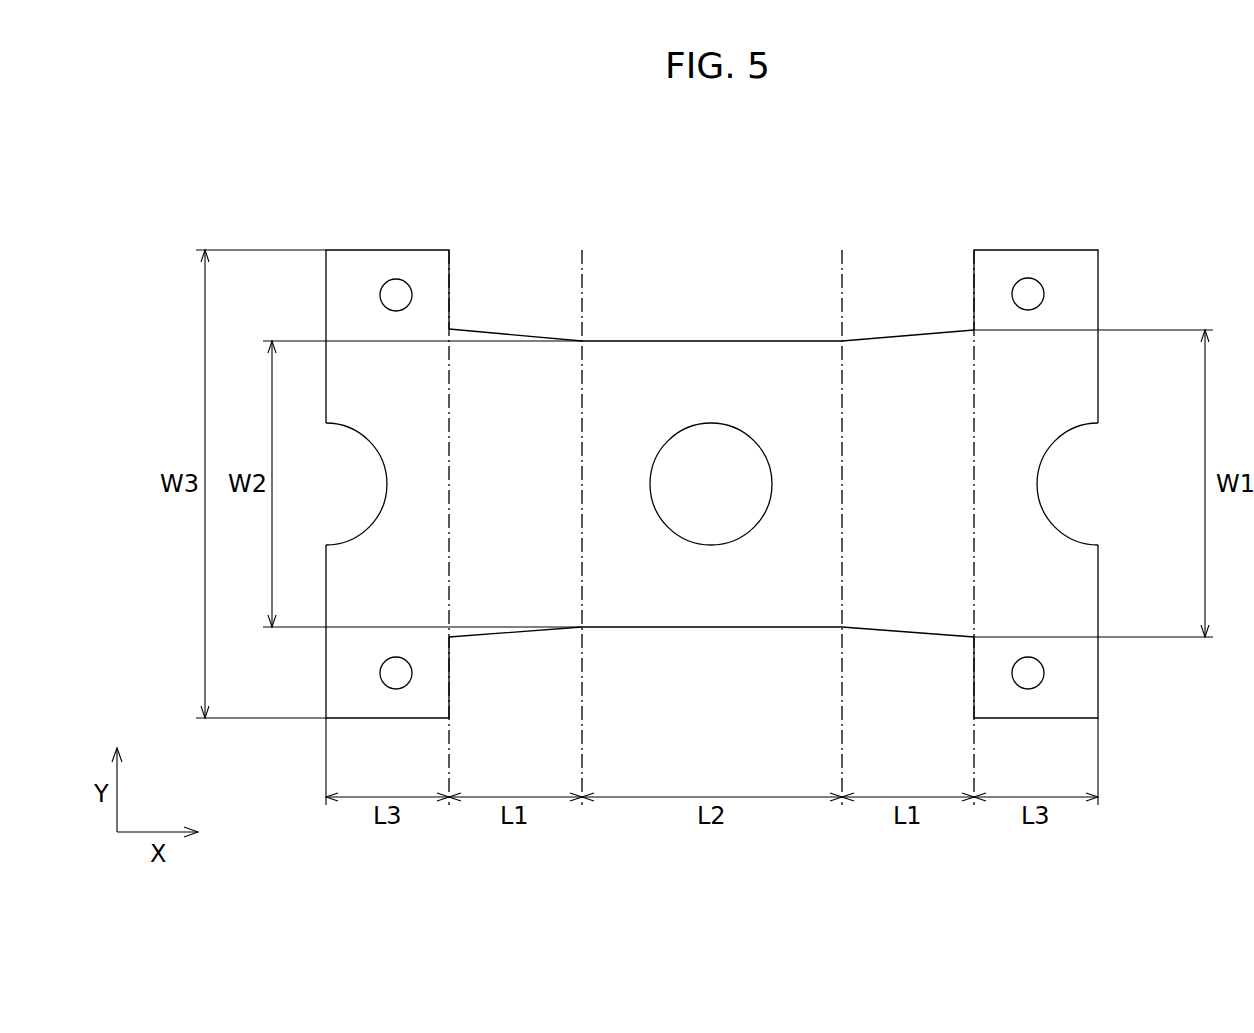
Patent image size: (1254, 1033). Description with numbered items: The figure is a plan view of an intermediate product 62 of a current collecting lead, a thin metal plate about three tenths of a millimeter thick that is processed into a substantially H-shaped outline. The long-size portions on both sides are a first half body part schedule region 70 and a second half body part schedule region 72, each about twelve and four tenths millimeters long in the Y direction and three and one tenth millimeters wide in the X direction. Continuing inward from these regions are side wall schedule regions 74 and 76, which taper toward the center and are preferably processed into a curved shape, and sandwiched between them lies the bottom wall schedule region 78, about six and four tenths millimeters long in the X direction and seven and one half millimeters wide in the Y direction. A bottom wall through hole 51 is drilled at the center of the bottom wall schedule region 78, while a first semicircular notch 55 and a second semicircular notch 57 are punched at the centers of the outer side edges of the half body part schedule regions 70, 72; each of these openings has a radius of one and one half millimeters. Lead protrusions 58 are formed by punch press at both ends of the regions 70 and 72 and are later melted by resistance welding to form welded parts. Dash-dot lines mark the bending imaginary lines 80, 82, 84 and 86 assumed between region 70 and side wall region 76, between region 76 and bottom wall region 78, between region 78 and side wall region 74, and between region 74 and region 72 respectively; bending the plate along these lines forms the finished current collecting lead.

The intermediate product 62 is at (905, 198).
The first half body part schedule region 70 is at (984, 250).
The second half body part schedule region 72 is at (340, 250).
The side wall schedule region 74 is at (512, 333).
The side wall schedule region 76 is at (902, 334).
The bottom wall schedule region 78 is at (705, 340).
The bottom wall through hole 51 is at (705, 424).
The first semicircular notch 55 is at (1078, 428).
The second semicircular notch 57 is at (386, 484).
The lead protrusion 58 is at (388, 280).
The bending imaginary line 80 is at (974, 572).
The bending imaginary line 82 is at (842, 602).
The bending imaginary line 84 is at (582, 608).
The bending imaginary line 86 is at (449, 572).